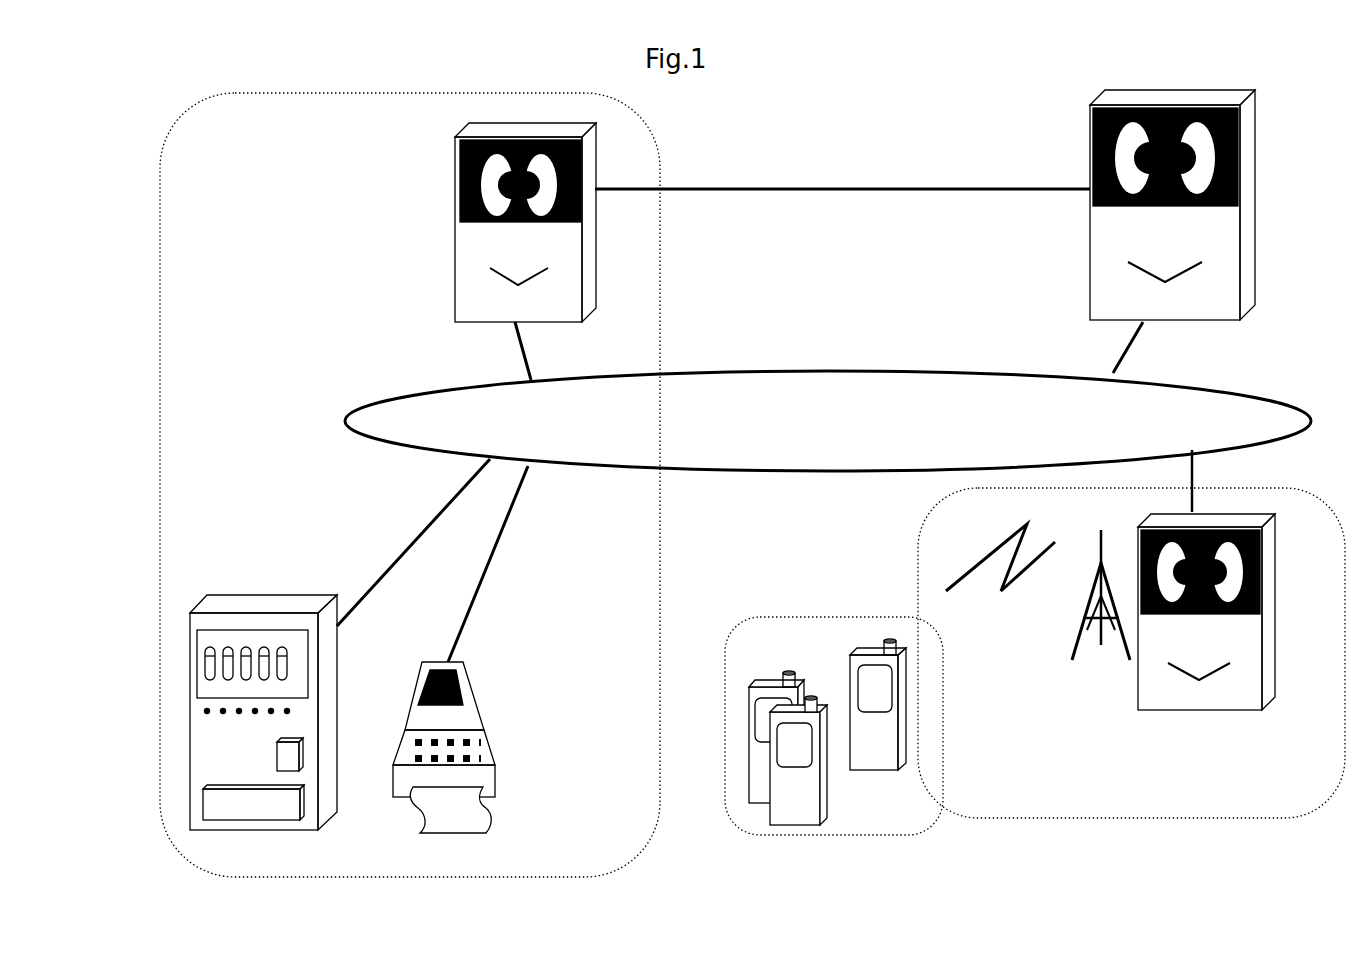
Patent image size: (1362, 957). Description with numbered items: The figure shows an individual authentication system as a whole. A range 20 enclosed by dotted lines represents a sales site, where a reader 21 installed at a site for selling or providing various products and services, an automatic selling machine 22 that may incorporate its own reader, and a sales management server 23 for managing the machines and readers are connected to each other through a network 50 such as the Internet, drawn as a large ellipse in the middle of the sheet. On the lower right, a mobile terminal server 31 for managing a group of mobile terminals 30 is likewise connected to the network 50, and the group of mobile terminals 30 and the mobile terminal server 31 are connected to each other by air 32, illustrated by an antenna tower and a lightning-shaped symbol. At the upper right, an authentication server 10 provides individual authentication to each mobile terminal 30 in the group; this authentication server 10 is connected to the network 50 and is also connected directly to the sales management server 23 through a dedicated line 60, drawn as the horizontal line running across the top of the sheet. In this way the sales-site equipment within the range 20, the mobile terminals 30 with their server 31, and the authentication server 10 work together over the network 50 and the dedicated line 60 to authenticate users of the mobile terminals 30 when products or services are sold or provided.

The authentication server 10 is at (1228, 252).
The range enclosed by dotted lines 20 is at (632, 297).
The reader 21 is at (470, 718).
The automatic selling machine 22 is at (272, 605).
The sales management server 23 is at (462, 258).
The mobile terminals 30 is at (812, 637).
The mobile terminal server 31 is at (1215, 700).
The air 32 is at (985, 553).
The network 50 is at (1220, 385).
The dedicated line 60 is at (718, 186).